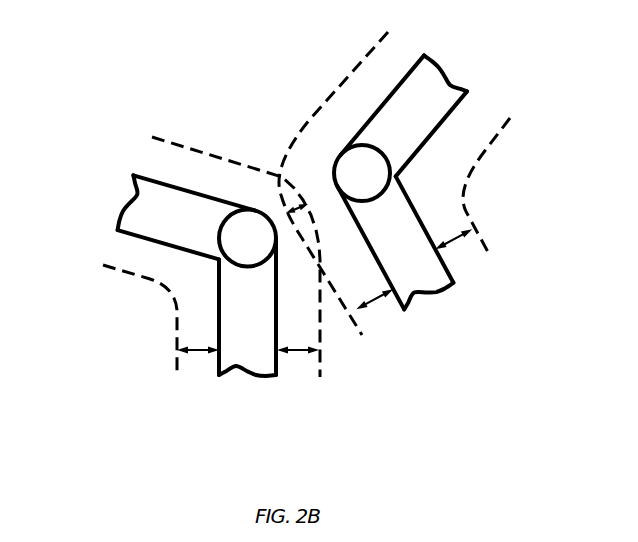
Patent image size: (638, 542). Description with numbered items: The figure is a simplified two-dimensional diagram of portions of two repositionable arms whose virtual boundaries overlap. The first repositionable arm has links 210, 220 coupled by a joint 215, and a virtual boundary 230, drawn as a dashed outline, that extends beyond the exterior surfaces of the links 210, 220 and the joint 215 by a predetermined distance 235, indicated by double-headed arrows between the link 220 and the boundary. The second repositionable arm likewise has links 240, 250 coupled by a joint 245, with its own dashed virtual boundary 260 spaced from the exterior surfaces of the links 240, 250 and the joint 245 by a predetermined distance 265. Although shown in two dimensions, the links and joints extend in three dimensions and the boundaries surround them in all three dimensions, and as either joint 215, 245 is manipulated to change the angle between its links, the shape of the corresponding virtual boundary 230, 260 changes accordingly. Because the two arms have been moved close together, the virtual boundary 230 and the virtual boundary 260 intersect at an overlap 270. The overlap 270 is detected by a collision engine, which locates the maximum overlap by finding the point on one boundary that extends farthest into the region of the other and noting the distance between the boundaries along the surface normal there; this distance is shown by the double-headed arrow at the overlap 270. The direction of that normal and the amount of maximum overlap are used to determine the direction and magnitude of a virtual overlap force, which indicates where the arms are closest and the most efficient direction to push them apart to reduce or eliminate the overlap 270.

The link 210 is at (130, 209).
The joint 215 is at (230, 213).
The link 220 is at (248, 371).
The virtual boundary 230 is at (227, 158).
The predetermined distance 235 is at (197, 353).
The link 240 is at (430, 293).
The joint 245 is at (383, 152).
The link 250 is at (440, 68).
The virtual boundary 260 is at (361, 63).
The predetermined distance 265 is at (462, 243).
The overlap 270 is at (295, 207).